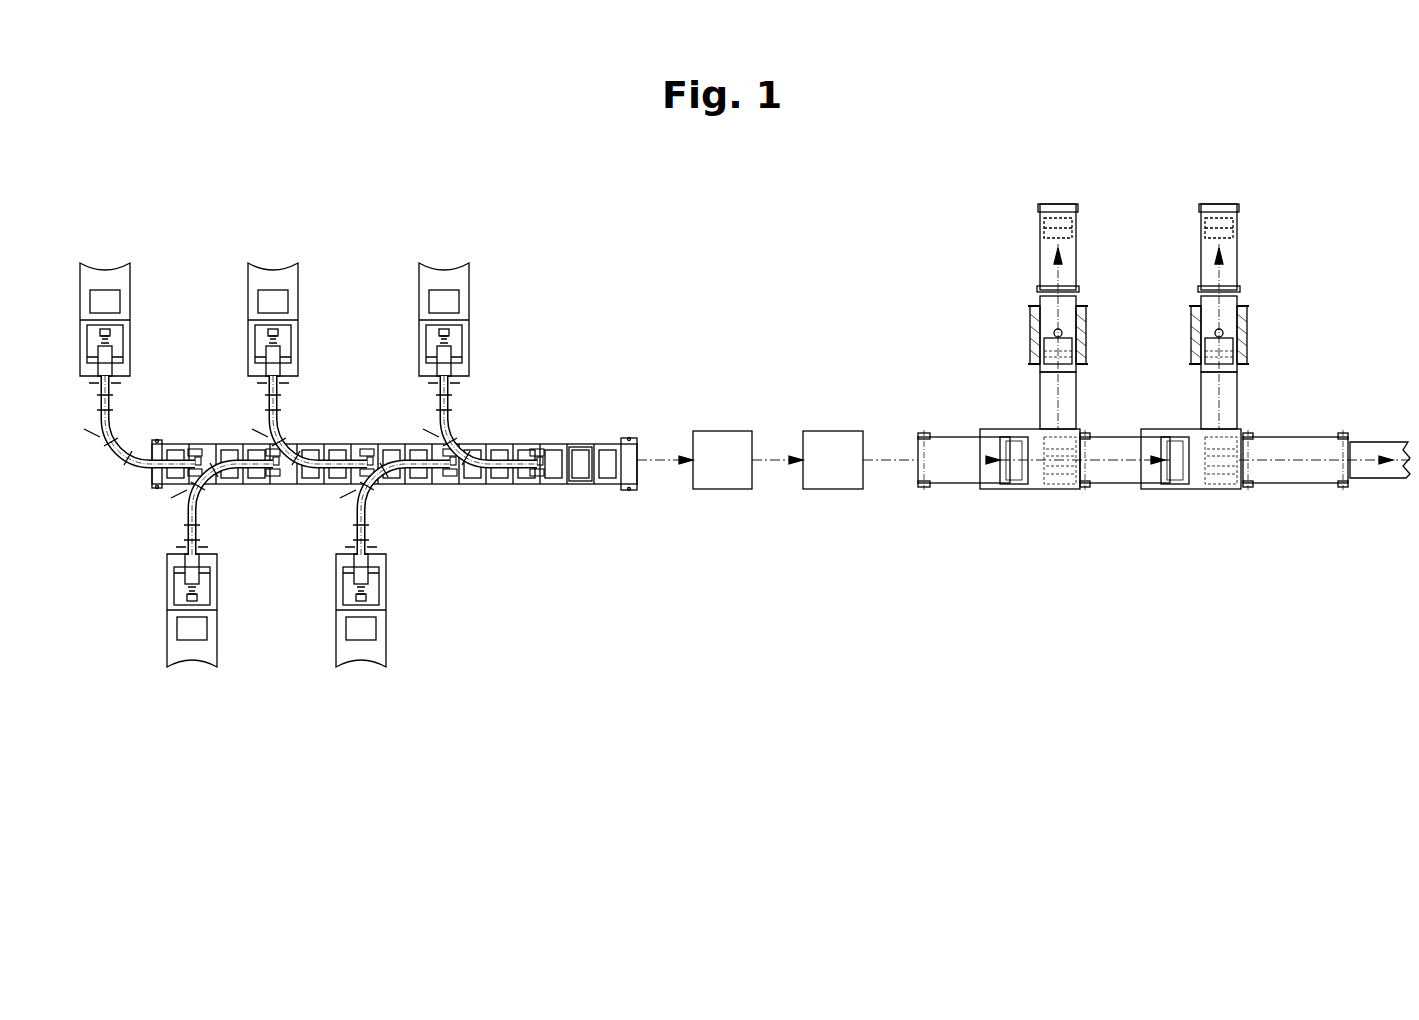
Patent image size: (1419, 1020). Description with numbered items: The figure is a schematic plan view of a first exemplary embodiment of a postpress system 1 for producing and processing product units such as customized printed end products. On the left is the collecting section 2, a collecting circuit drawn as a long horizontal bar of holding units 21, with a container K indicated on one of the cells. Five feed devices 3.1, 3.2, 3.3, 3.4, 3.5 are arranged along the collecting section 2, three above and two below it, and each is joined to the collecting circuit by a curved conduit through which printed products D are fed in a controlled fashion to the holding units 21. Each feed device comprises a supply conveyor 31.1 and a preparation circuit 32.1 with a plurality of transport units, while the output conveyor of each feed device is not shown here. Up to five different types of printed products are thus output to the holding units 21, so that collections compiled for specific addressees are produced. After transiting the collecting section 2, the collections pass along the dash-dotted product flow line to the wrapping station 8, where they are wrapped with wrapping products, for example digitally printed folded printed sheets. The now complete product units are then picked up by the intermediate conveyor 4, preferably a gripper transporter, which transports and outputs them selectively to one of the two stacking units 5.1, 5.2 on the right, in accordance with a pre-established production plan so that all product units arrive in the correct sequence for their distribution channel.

The postpress system 1 is at (745, 458).
The collecting section 2 is at (408, 544).
The holding unit 21 is at (369, 444).
The capsule / container K is at (580, 467).
The printed product D is at (122, 432).
The feed device 3.1 is at (505, 312).
The feed device 3.2 is at (367, 692).
The feed device 3.3 is at (277, 255).
The feed device 3.4 is at (190, 690).
The feed device 3.5 is at (137, 311).
The supply conveyor 31.1 is at (493, 310).
The preparation circuit 32.1 is at (499, 383).
The intermediate conveyor 4 is at (818, 470).
The wrapping station 8 is at (724, 478).
The stacking unit 5.1 is at (1008, 382).
The stacking unit 5.2 is at (1174, 385).